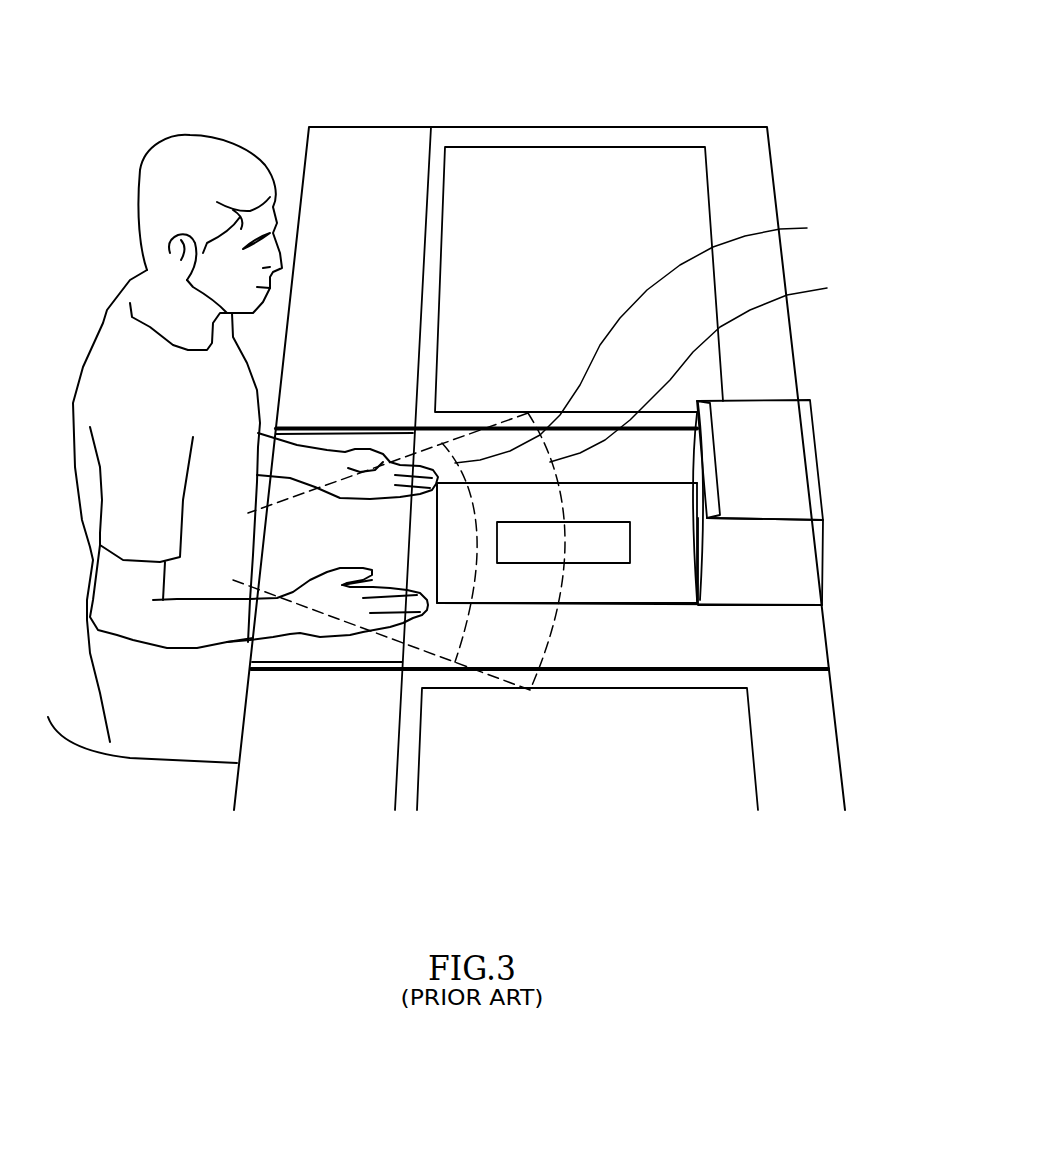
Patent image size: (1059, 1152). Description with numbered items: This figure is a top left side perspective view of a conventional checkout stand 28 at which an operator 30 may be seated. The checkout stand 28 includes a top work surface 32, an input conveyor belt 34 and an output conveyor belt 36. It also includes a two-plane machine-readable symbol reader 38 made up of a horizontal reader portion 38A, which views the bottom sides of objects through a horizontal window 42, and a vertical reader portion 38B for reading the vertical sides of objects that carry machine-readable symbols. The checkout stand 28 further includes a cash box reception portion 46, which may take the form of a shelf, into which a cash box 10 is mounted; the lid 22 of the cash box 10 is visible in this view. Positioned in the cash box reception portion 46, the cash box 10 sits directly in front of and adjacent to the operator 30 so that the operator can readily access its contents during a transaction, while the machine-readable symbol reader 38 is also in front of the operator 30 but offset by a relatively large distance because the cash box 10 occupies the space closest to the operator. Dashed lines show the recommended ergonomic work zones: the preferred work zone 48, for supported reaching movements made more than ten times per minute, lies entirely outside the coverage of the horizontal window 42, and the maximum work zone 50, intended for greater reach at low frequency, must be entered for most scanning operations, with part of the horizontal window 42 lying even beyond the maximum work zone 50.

The cash box 10 is at (326, 445).
The lid 22 is at (288, 557).
The checkout stand 28 is at (668, 83).
The operator 30 is at (117, 328).
The top work surface 32 is at (508, 630).
The input conveyor belt 34 is at (675, 722).
The output conveyor belt 36 is at (487, 180).
The two-plane machine-readable symbol reader 38 is at (783, 498).
The horizontal reader portion 38A is at (673, 607).
The vertical reader portion 38B is at (780, 453).
The horizontal window 42 is at (612, 552).
The cash box reception portion 46 is at (283, 662).
The preferred work zone 48 is at (534, 454).
The maximum work zone 50 is at (702, 370).